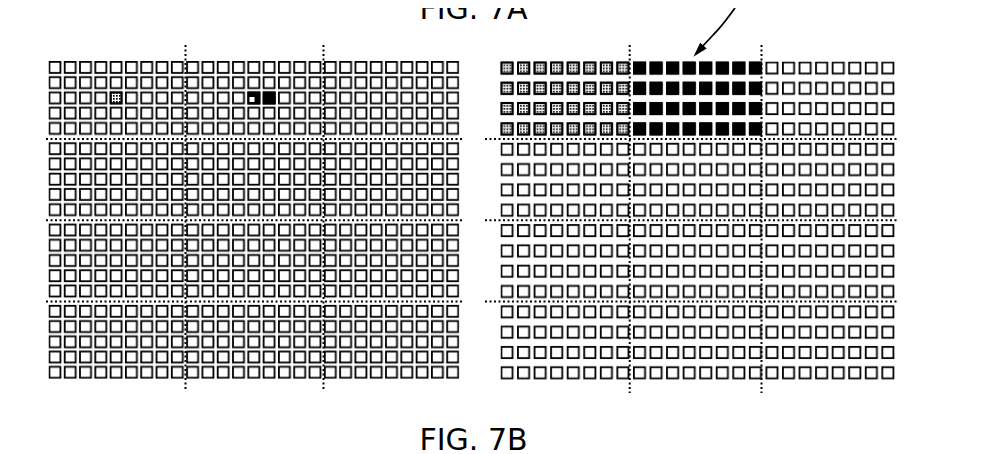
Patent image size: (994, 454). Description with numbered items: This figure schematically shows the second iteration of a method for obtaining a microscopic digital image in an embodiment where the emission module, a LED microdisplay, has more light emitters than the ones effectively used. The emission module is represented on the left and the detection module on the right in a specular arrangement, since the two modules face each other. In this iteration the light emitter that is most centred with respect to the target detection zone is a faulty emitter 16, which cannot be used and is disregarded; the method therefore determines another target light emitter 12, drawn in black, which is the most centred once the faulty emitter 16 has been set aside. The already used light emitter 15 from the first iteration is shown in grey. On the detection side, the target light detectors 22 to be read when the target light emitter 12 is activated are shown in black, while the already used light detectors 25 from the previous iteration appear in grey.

The target light emitter 12 is at (261, 85).
The already used light emitter 15 is at (110, 86).
The faulty emitter 16 is at (249, 87).
The target light detectors 22 is at (645, 52).
The already used light detectors 25 is at (544, 52).